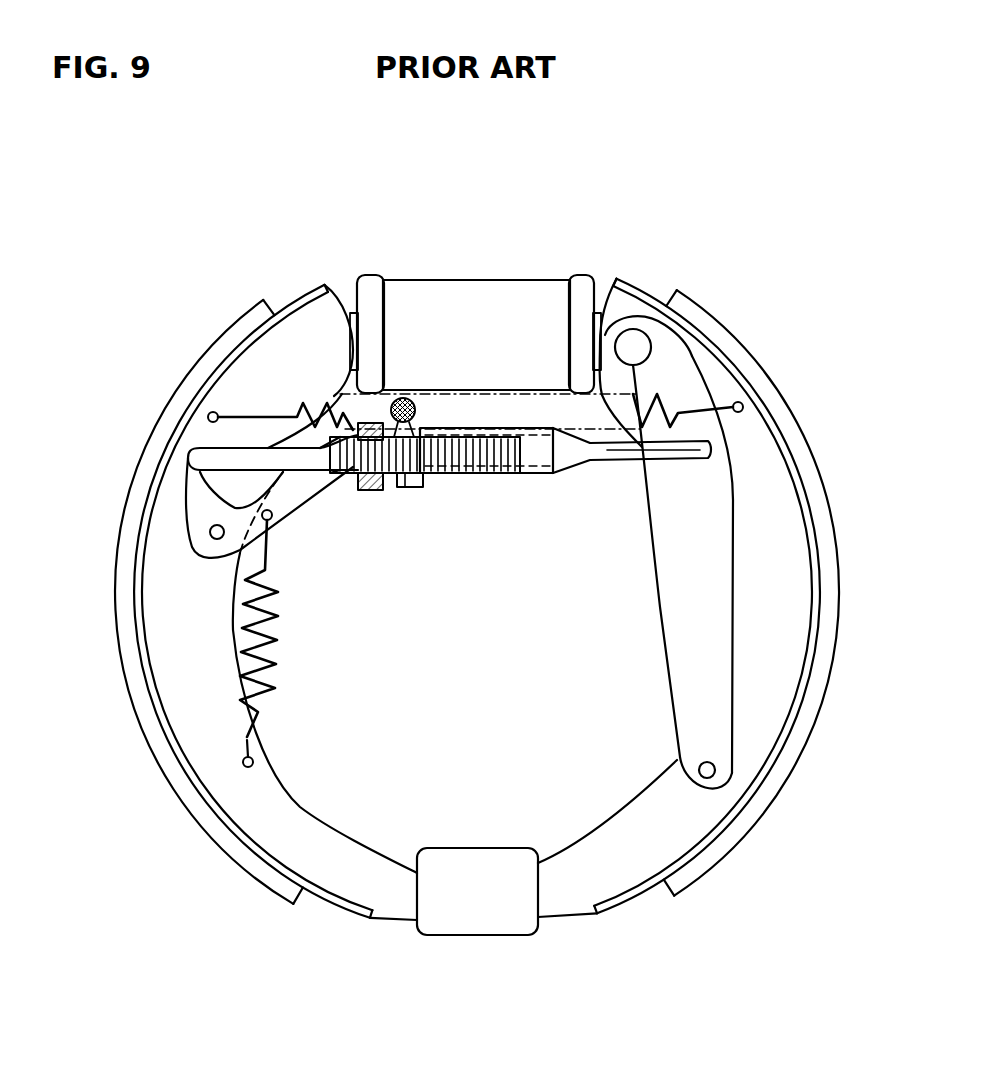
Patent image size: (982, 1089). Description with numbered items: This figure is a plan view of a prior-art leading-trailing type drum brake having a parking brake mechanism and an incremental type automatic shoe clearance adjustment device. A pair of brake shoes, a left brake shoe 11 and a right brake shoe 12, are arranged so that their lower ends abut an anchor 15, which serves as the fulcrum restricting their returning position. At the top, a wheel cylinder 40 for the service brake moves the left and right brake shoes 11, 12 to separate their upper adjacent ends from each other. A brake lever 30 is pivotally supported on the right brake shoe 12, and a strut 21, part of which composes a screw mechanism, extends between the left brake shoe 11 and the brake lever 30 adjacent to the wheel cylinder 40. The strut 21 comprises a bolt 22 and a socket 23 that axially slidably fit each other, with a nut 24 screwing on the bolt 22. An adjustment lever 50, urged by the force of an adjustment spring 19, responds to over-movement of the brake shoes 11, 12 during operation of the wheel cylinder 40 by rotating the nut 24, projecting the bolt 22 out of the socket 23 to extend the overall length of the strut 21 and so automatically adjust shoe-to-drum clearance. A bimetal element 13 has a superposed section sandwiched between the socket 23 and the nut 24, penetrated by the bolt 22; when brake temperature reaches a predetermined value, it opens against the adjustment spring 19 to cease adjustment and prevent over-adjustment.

The left brake shoe 11 is at (163, 393).
The right brake shoe 12 is at (783, 390).
The bimetal element 13 is at (419, 490).
The anchor 15 is at (473, 847).
The adjustment spring 19 is at (267, 663).
The strut 21 is at (473, 477).
The bolt 22 is at (503, 474).
The socket 23 is at (573, 458).
The nut 24 is at (370, 490).
The brake lever 30 is at (667, 610).
The wheel cylinder 40 is at (483, 277).
The adjustment lever 50 is at (287, 513).